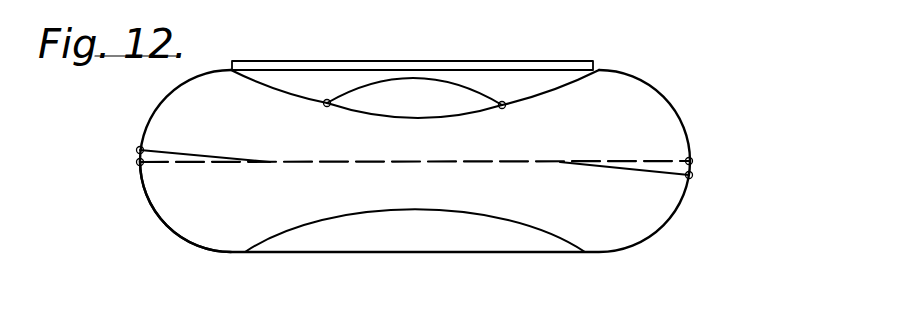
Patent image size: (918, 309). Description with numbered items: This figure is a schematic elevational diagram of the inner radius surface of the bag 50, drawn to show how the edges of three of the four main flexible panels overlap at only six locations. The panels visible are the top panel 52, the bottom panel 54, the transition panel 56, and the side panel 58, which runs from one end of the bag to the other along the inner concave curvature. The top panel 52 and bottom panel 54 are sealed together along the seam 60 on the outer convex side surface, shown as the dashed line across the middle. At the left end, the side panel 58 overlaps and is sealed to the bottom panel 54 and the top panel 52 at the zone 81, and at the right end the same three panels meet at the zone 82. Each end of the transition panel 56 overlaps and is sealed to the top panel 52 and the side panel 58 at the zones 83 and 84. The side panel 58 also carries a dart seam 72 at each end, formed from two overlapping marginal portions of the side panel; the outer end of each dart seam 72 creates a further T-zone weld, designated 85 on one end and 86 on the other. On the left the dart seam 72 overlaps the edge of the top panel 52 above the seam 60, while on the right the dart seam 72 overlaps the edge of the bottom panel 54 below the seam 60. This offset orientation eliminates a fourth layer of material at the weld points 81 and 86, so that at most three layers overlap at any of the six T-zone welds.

The bag 50 is at (658, 82).
The top panel 52 is at (517, 90).
The bottom panel 54 is at (473, 235).
The transition panel 56 is at (413, 100).
The side panel 58 is at (178, 206).
The seam 60 is at (180, 164).
The dart seam 72 is at (180, 152).
The T-zone weld point 81 is at (137, 164).
The T-zone weld point 82 is at (692, 159).
The T-zone weld point 83 is at (327, 107).
The T-zone weld point 84 is at (502, 109).
The T-zone weld point 85 is at (136, 150).
The T-zone weld point 86 is at (692, 177).